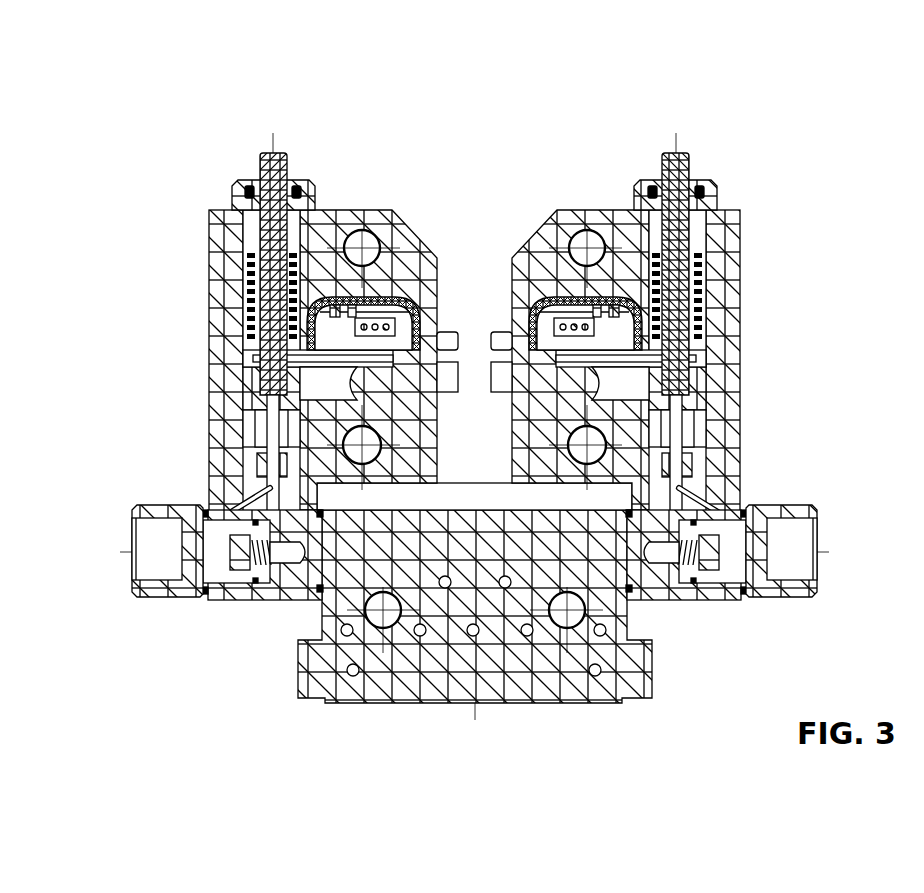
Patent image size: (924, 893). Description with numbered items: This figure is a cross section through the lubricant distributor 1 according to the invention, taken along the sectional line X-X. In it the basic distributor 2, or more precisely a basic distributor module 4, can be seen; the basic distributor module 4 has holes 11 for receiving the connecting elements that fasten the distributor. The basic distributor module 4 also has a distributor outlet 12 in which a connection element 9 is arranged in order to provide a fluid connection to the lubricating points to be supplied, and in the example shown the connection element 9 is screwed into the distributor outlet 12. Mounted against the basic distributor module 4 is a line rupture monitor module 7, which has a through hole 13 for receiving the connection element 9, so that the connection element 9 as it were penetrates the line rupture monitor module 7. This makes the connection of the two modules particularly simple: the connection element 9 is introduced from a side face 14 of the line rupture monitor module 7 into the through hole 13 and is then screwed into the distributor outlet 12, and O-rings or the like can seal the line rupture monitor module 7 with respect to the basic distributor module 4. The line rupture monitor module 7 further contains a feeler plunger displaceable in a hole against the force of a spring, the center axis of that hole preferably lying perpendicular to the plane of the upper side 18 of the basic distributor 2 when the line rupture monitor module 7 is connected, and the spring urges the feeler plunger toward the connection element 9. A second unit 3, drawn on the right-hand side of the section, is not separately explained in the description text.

The lubricant distributor 1 is at (172, 155).
The basic distributor 2 is at (416, 641).
The second solenoid valve 3 is at (682, 300).
The basic distributor module 4 is at (393, 682).
The line rupture monitor module 7 is at (725, 285).
The connection element 9 is at (810, 508).
The holes 11 is at (383, 610).
The distributor outlet 12 is at (593, 587).
The through hole 13 is at (663, 587).
The side face 14 is at (682, 361).
The upper side 18 is at (462, 505).